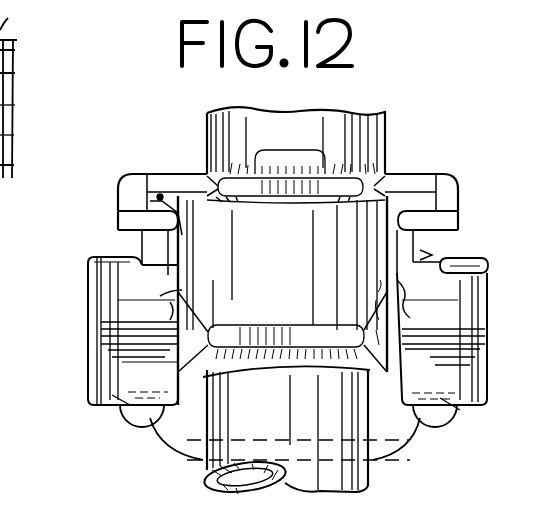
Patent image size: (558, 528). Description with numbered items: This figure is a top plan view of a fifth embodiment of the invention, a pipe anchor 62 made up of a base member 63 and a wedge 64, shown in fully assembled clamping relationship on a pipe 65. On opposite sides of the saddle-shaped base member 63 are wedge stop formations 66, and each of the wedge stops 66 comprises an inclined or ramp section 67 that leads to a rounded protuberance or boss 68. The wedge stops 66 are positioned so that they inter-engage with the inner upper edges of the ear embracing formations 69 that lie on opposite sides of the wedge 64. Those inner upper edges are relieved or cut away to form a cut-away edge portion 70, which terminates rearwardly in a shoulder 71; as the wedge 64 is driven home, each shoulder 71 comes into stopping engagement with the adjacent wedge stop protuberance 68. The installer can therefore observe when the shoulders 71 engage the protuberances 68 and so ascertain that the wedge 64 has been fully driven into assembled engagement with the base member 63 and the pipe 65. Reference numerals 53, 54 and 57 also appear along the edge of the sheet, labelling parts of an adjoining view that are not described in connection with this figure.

The adjacent figure element 53 is at (0, 120).
The adjacent figure element 54 is at (0, 148).
The adjacent figure element 57 is at (0, 92).
The pipe anchor 62 is at (131, 170).
The base member 63 is at (292, 256).
The wedge 64 is at (490, 260).
The pipe 65 is at (372, 468).
The wedge stop formations 66 is at (178, 344).
The inclined or ramp section 67 is at (286, 389).
The rounded protuberance or boss 68 is at (178, 292).
The ear embracing formations 69 is at (92, 395).
The cut-away edge portion 70 is at (172, 284).
The shoulder 71 is at (178, 300).